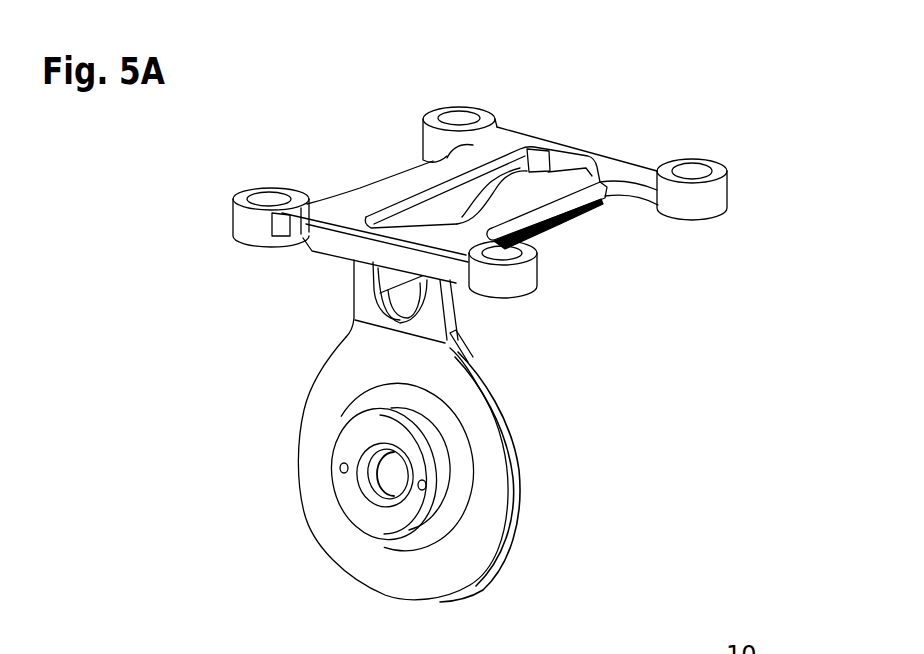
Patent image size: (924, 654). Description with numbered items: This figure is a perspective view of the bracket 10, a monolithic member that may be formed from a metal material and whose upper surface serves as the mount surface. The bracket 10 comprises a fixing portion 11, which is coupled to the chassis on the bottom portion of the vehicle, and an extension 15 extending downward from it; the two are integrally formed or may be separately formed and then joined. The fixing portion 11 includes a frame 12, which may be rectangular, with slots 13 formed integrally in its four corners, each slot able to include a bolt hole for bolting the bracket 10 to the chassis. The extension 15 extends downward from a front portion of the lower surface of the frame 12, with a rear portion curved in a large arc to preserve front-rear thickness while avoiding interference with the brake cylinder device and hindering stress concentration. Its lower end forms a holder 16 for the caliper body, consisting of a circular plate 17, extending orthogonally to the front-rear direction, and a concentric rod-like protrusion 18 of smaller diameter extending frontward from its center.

The bracket 10 is at (640, 97).
The fixing portion 11 is at (359, 141).
The frame 12 is at (577, 213).
The slots 13 is at (272, 188).
The extension 15 is at (577, 502).
The holder 16 is at (273, 483).
The circular plate 17 is at (515, 403).
The protrusion 18 is at (367, 522).